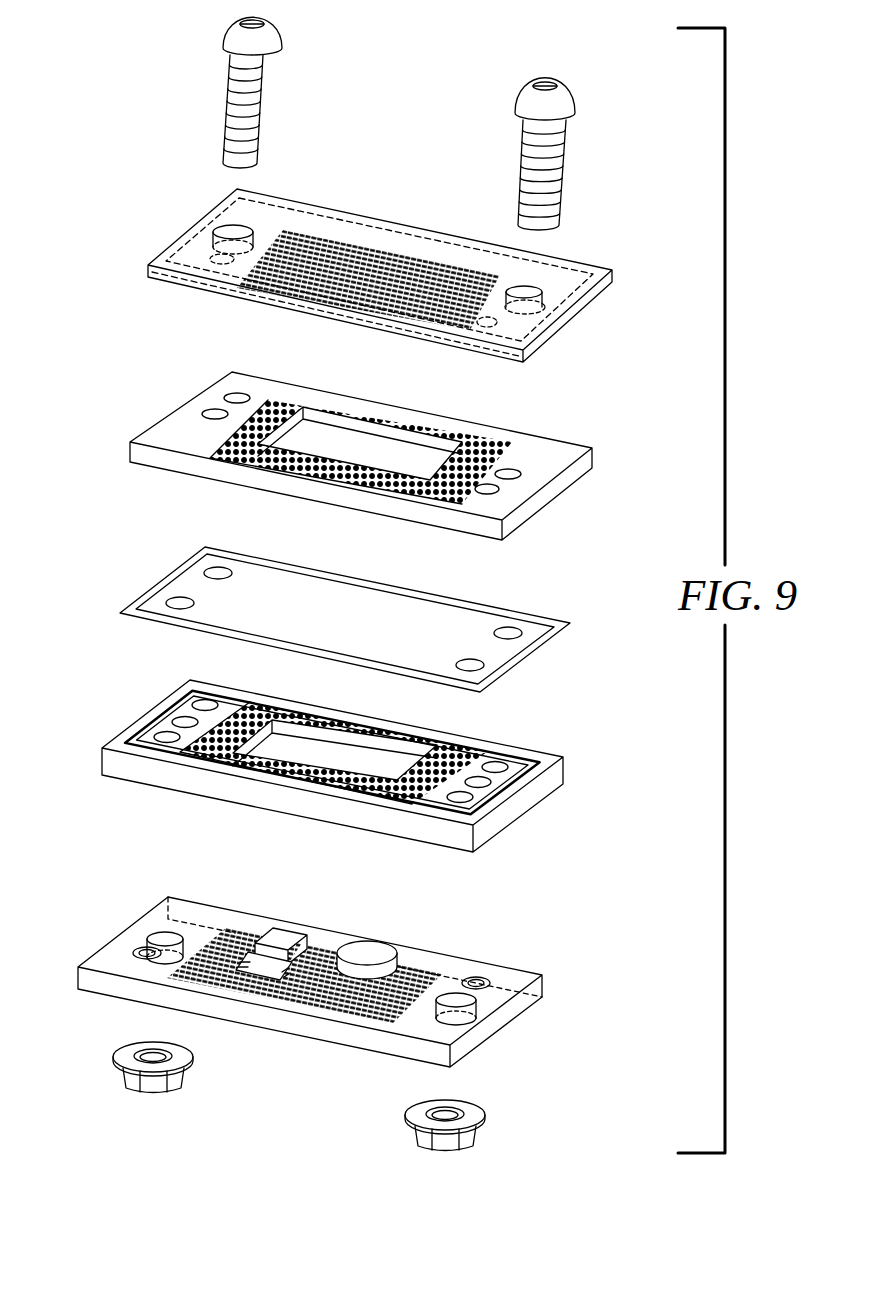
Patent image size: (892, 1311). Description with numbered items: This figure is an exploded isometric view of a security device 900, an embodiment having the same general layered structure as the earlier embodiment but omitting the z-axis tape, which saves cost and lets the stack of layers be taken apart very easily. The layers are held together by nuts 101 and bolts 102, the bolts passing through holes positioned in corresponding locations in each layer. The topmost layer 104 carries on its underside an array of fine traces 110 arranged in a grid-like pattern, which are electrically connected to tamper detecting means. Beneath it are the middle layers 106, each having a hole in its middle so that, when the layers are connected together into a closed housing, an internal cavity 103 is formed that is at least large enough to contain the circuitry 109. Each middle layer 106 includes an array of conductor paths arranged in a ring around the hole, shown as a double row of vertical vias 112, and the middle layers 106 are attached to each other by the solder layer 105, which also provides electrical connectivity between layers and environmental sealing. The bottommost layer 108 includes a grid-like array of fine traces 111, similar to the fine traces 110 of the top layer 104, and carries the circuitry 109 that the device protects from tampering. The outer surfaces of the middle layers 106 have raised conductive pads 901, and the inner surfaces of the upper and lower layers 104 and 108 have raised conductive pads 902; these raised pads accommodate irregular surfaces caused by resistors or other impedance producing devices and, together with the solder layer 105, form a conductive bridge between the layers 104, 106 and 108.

The security device 900 is at (121, 142).
The bolt 102 is at (266, 89).
The raised conductive pad 902 is at (236, 228).
The layer 104 is at (585, 257).
The fine traces 110 is at (327, 287).
The raised conductive pad 901 is at (236, 393).
The vias 112 is at (217, 434).
The internal cavity 103 is at (347, 456).
The layer 106 is at (562, 450).
The layer 105 is at (542, 616).
The fine traces 111 is at (233, 943).
The circuitry 109 is at (373, 951).
The layer 108 is at (520, 976).
The nut 101 is at (187, 1073).